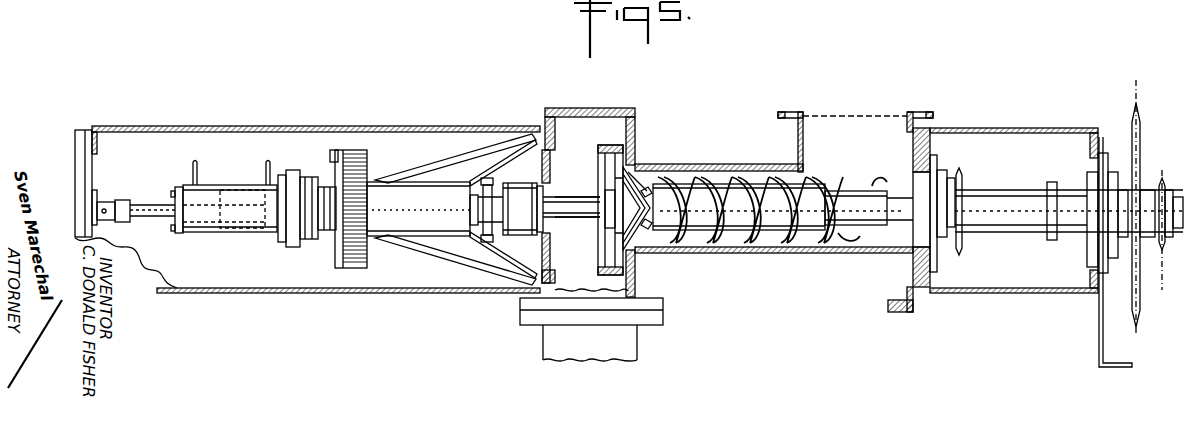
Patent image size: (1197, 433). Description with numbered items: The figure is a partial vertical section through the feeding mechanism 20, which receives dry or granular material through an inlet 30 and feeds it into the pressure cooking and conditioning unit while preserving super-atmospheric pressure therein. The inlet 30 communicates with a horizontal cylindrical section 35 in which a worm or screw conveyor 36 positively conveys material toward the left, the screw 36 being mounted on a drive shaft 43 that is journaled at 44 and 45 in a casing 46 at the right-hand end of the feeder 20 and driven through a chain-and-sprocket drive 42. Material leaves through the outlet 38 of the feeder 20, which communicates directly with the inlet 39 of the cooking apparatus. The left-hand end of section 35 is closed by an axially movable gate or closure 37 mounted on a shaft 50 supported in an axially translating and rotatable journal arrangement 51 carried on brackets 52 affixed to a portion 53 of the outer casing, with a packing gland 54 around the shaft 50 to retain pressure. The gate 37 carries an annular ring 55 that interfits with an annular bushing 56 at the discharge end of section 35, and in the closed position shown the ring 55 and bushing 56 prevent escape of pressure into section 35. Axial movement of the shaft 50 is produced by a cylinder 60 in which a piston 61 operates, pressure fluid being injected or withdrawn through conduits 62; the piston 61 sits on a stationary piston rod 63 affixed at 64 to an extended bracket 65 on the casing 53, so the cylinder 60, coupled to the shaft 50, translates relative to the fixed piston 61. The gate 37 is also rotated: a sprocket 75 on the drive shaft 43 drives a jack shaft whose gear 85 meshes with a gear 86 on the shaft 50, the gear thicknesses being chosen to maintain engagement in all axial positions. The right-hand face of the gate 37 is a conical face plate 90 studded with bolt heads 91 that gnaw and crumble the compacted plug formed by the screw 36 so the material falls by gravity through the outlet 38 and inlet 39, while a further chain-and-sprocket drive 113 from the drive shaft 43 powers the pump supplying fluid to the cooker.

The feeding mechanism 20 is at (148, 96).
The inlet 30 is at (844, 122).
The horizontal cylindrical section 35 is at (724, 165).
The worm or screw conveyor 36 is at (778, 224).
The gate or closure 37 is at (610, 179).
The outlet 38 is at (637, 265).
The inlet of cooking and conditioning apparatus 39 is at (600, 340).
The chain-and-sprocket drive 42 is at (1140, 130).
The drive shaft 43 is at (1017, 200).
The journal 44 is at (938, 248).
The journal 45 is at (1090, 256).
The casing 46 is at (994, 128).
The axially movable shaft 50 is at (583, 192).
The axially translating and rotatable journal arrangement 51 is at (417, 216).
The brackets 52 is at (472, 180).
The portion of outer casing 53 is at (548, 110).
The packing gland 54 is at (510, 230).
The annular ring 55 is at (614, 150).
The annular bushing 56 is at (624, 167).
The cylinder 60 is at (212, 228).
The piston 61 is at (242, 193).
The conduits 62 is at (196, 156).
The stationary piston rod 63 is at (144, 205).
The affixing point 64 is at (85, 190).
The extended bracket 65 is at (338, 127).
The sprocket 75 is at (962, 180).
The gear 85 is at (334, 166).
The gear 86 is at (366, 163).
The conical face plate 90 is at (605, 228).
The bolt heads 91 is at (648, 191).
The chain-and-sprocket drive 113 is at (1168, 181).